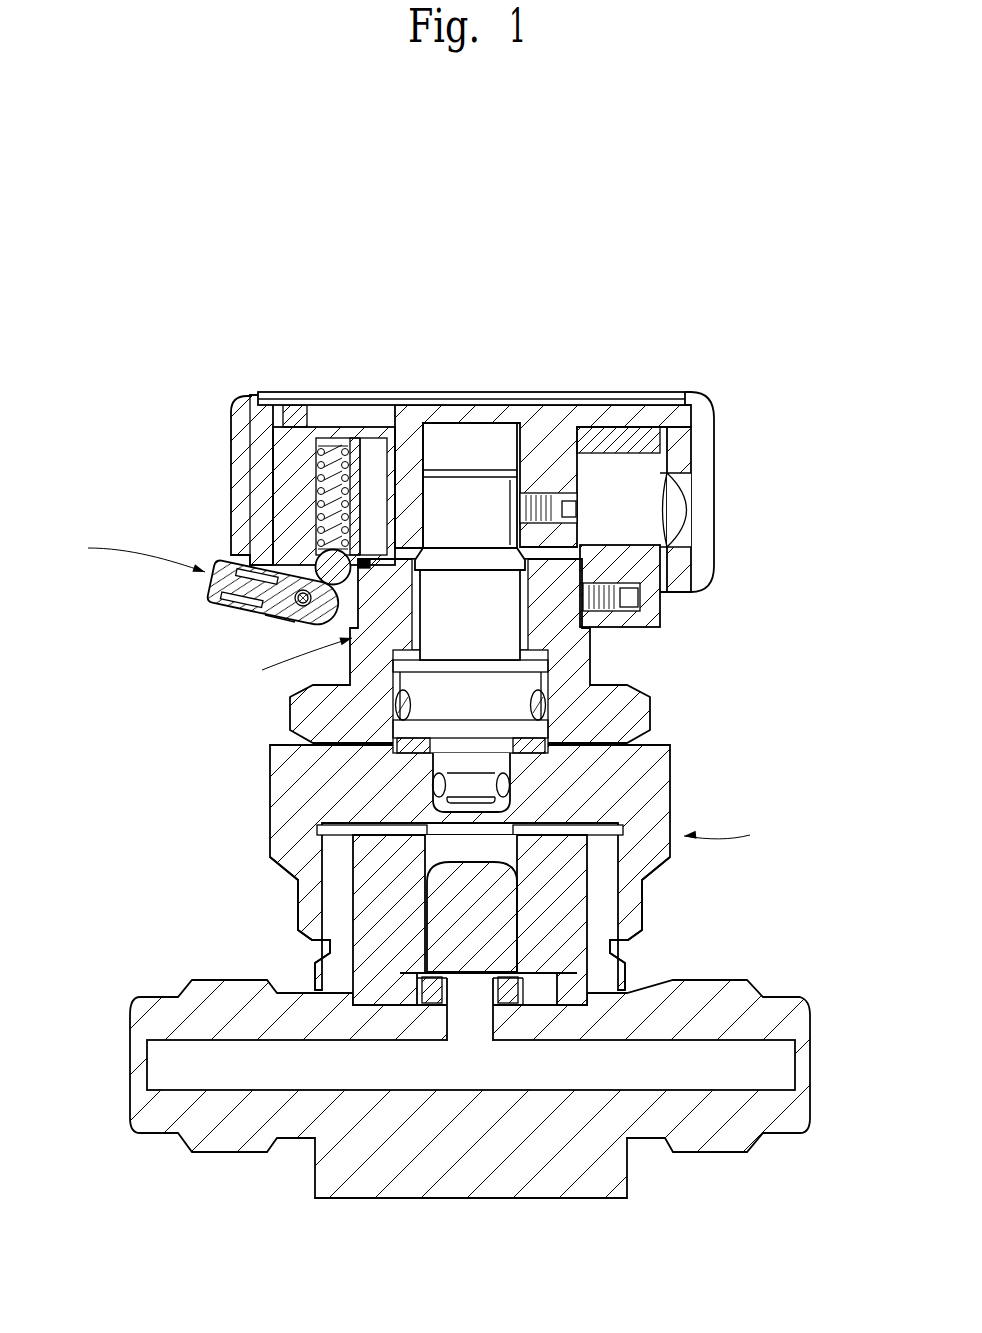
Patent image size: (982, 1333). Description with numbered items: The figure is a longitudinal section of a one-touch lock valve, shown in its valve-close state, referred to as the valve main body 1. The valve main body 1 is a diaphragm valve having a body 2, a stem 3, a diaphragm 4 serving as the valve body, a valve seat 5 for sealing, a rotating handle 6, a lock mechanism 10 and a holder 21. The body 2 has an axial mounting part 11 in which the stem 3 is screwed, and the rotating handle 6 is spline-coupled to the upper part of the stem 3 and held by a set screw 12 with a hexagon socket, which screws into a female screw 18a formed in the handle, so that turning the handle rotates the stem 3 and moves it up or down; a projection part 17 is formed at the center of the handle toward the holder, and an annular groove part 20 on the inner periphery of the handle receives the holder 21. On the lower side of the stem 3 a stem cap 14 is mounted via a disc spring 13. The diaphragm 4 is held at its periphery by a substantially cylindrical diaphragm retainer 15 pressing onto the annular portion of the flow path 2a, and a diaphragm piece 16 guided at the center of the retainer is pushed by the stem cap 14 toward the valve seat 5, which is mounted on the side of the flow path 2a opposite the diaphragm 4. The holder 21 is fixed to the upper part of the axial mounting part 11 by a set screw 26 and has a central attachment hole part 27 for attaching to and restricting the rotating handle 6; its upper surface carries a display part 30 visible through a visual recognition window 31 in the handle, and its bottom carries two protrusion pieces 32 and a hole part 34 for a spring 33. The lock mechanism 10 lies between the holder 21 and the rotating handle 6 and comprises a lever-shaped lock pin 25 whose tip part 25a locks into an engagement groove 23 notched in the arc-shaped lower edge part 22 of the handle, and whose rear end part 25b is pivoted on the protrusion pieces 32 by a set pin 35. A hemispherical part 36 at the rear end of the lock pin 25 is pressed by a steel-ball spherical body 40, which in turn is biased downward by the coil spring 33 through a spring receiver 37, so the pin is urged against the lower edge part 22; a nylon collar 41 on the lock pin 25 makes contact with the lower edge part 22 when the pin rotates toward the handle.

The valve main body 1 is at (728, 835).
The body 2 is at (305, 888).
The flow path 2a is at (565, 990).
The stem 3 is at (480, 612).
The diaphragm 4 is at (560, 965).
The valve seat 5 is at (437, 1003).
The rotating handle 6 is at (553, 440).
The lock mechanism 10 is at (130, 550).
The axial mounting part 11 is at (350, 648).
The set screw 12 is at (560, 500).
The disc spring 13 is at (610, 725).
The stem cap 14 is at (405, 790).
The diaphragm retainer 15 is at (375, 950).
The diaphragm piece 16 is at (397, 855).
The projection part 17 is at (600, 478).
The female screw 18a is at (665, 515).
The annular groove part 20 is at (640, 440).
The holder 21 is at (300, 485).
The lower edge part 22 is at (640, 592).
The engagement groove 23 is at (303, 598).
The lock pin (lock member) 25 is at (240, 600).
The tip part 25a is at (258, 566).
The rear end part 25b is at (266, 612).
The set screw 26 is at (600, 607).
The attachment hole part 27 is at (478, 545).
The display part 30 is at (335, 462).
The visual recognition window 31 is at (347, 398).
The protrusion pieces 32 is at (290, 662).
The spring 33 is at (330, 440).
The hole part 34 is at (383, 500).
The set pin 35 is at (280, 620).
The hemispherical part 36 is at (472, 560).
The spring receiver 37 is at (327, 518).
The spherical body 40 is at (450, 420).
The collar 41 is at (300, 601).